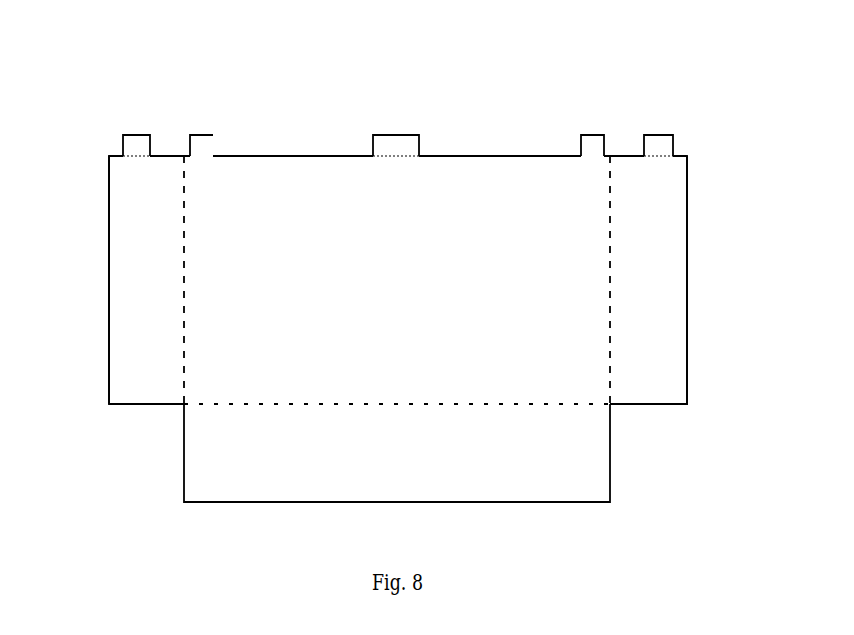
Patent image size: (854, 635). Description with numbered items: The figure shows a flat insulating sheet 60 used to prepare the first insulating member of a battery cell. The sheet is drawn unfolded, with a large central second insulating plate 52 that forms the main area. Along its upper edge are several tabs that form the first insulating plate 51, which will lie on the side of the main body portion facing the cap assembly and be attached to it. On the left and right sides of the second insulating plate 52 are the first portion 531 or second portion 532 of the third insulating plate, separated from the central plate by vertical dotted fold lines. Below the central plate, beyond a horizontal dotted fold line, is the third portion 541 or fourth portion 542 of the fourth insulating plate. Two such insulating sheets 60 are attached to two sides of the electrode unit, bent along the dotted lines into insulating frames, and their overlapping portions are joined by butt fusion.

The insulating sheet 60 is at (60, 48).
The first insulating plate 51 is at (141, 143).
The second insulating plate 52 is at (326, 186).
The first portion 531 is at (397, 280).
The second portion 532 is at (123, 273).
The third portion 541 is at (467, 453).
The fourth portion 542 is at (582, 457).